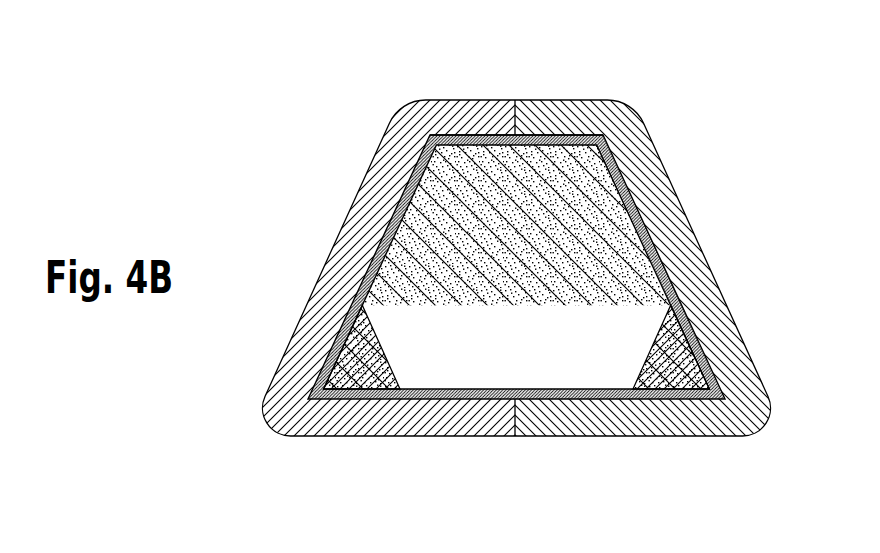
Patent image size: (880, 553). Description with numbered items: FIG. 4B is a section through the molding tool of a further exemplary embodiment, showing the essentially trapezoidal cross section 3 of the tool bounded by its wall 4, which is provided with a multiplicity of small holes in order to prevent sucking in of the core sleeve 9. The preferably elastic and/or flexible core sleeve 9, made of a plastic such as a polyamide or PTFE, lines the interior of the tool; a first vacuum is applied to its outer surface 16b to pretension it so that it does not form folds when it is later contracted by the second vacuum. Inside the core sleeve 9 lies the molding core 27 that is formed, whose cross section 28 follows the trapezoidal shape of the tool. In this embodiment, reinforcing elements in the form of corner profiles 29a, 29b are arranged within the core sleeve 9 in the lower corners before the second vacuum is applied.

The cross section 3 is at (668, 231).
The wall 4 is at (703, 297).
The core sleeve 9 is at (546, 136).
The outer surface 16b is at (392, 190).
The molding core 27 is at (582, 212).
The cross section 28 is at (598, 340).
The corner profile 29a is at (673, 370).
The corner profile 29b is at (357, 367).